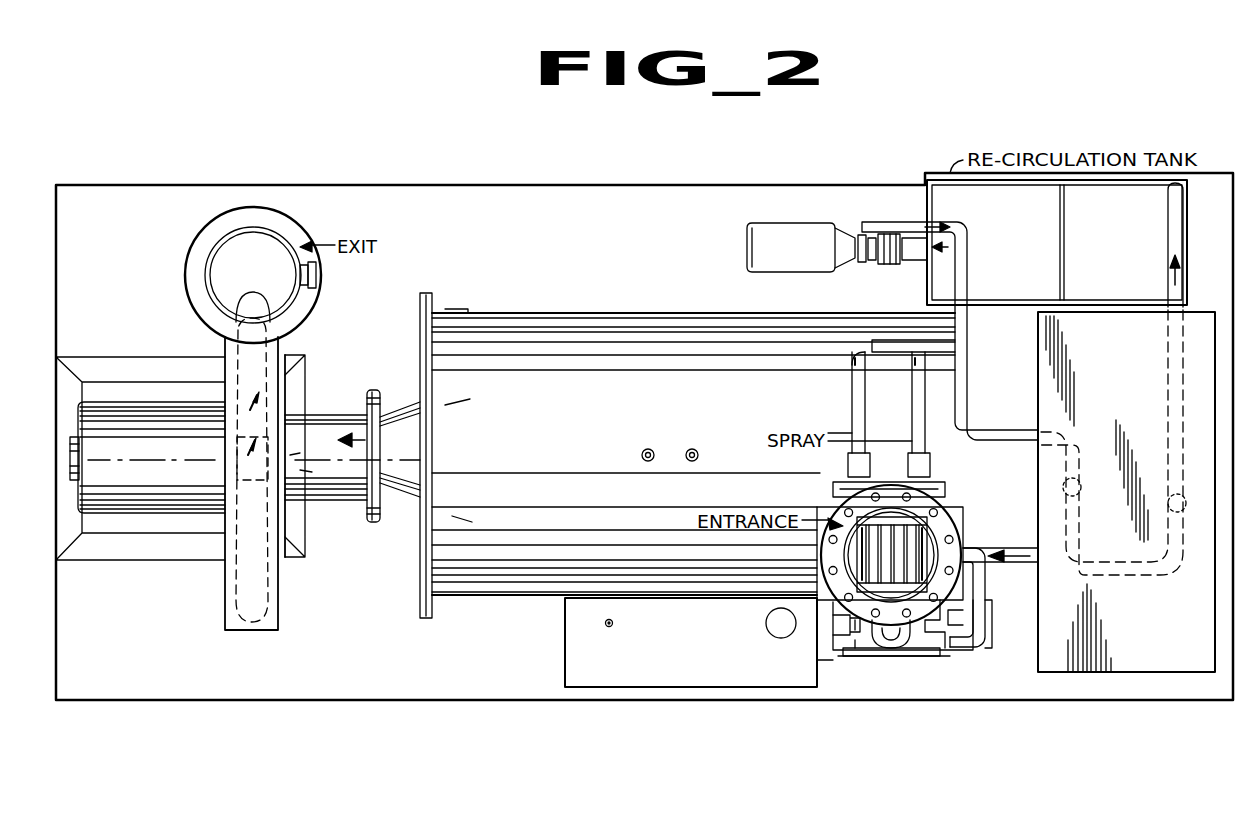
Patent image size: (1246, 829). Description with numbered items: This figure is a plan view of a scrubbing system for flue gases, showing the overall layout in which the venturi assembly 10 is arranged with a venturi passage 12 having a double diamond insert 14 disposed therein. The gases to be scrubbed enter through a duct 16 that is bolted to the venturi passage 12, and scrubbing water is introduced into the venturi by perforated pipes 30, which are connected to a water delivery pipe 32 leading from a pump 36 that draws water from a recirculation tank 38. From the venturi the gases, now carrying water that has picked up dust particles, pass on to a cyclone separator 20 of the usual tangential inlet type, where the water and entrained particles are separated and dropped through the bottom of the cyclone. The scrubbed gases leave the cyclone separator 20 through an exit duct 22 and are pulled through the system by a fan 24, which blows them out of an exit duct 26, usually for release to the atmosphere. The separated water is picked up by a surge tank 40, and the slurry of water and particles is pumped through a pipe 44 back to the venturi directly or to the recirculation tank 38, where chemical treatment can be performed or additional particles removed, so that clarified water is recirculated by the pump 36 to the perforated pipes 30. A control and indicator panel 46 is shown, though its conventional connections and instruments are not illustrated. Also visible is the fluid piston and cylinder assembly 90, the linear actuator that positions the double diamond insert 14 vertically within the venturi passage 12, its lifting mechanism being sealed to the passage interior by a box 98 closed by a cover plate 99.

The venturi assembly 10 is at (948, 502).
The venturi passage 12 is at (873, 553).
The double diamond insert 14 is at (942, 514).
The duct 16 is at (835, 546).
The cyclone separator 20 is at (562, 455).
The exit duct 22 is at (328, 426).
The fan 24 is at (233, 594).
The exit duct 26 is at (207, 270).
The perforated pipes 30 is at (836, 603).
The water delivery pipe 32 is at (962, 344).
The pump 36 is at (870, 262).
The recirculation tank 38 is at (1127, 256).
The surge tank 40 is at (755, 647).
The pipe 44 is at (1170, 403).
The control and indicator panel 46 is at (1141, 619).
The fluid piston and cylinder assembly 90 is at (903, 633).
The box 98 is at (857, 645).
The cover plate 99 is at (845, 657).